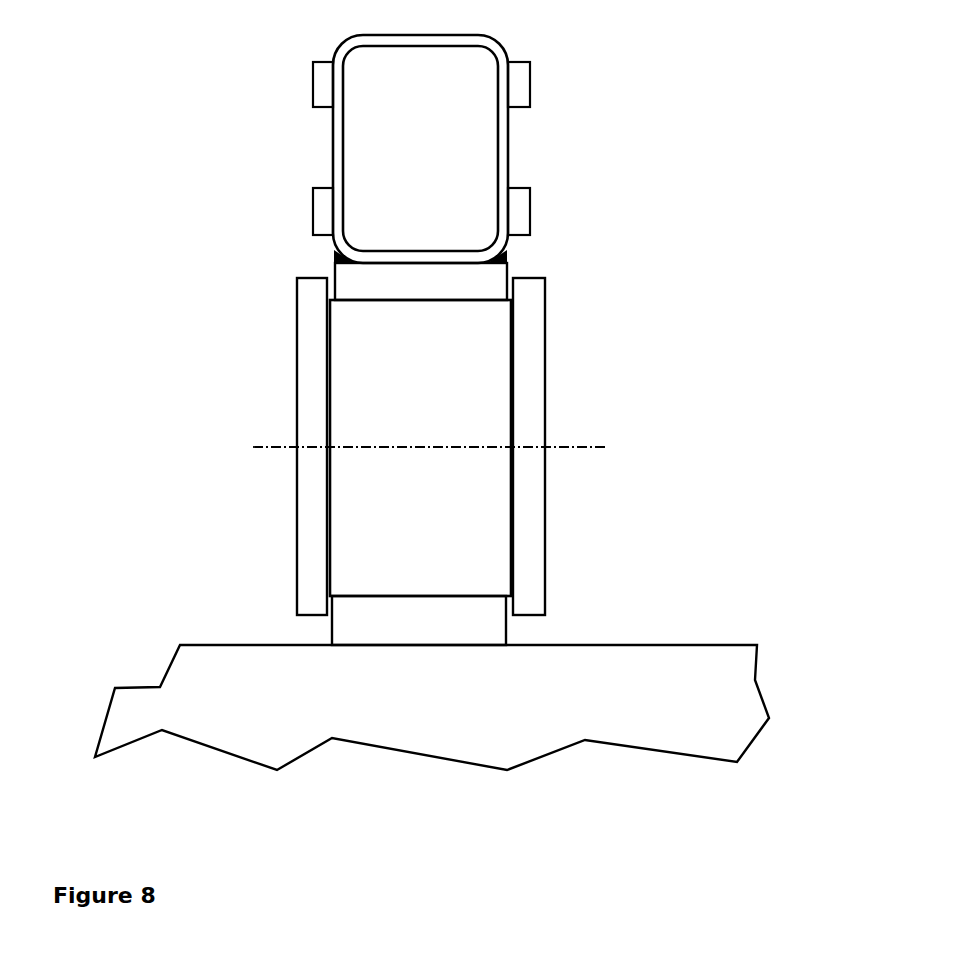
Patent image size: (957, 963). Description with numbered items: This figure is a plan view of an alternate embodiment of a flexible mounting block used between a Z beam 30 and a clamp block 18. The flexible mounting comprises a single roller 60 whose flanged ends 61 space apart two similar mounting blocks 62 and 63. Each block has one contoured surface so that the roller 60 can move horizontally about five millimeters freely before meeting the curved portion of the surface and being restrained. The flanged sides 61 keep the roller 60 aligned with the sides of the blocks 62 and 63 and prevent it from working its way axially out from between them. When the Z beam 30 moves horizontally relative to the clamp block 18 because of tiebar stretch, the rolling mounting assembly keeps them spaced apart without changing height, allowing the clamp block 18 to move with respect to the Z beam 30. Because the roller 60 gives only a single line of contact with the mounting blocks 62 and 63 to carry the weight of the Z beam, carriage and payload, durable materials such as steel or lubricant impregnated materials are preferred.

The clamp block 18 is at (710, 697).
The Z beam 30 is at (504, 140).
The roller 60 is at (463, 407).
The flanged ends 61 is at (307, 496).
The mounting block 62 is at (486, 285).
The mounting block 63 is at (479, 632).